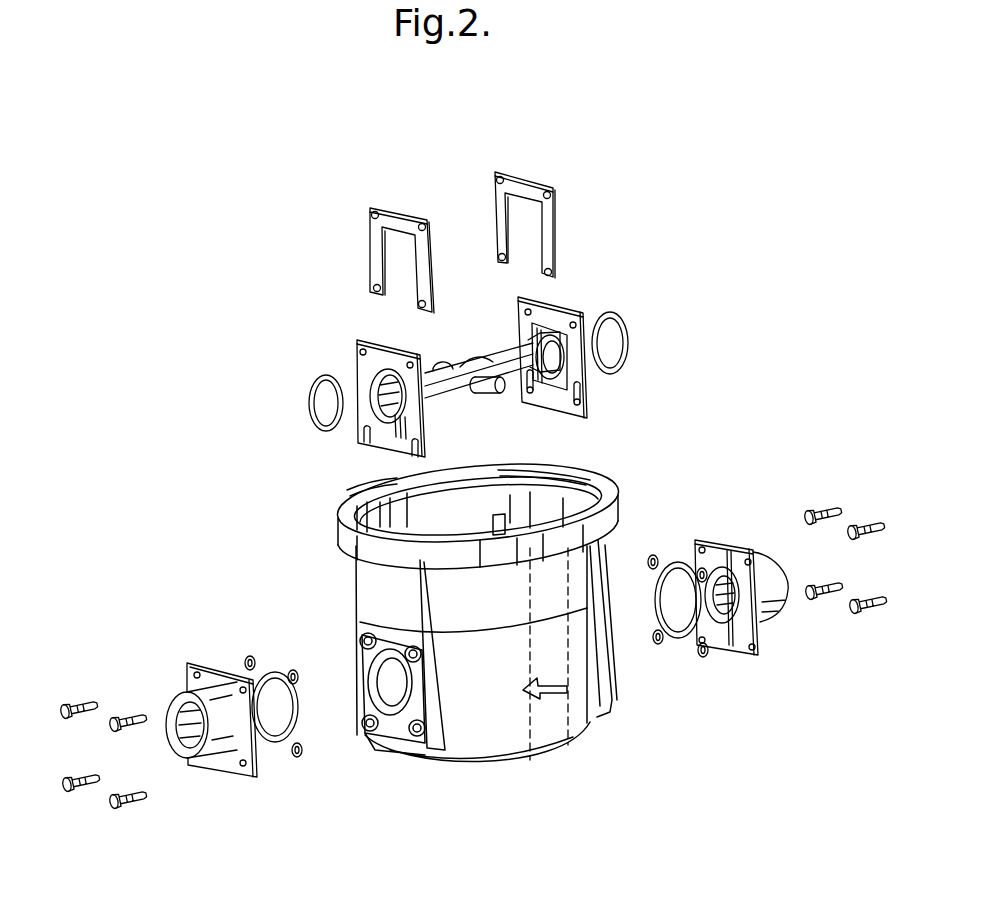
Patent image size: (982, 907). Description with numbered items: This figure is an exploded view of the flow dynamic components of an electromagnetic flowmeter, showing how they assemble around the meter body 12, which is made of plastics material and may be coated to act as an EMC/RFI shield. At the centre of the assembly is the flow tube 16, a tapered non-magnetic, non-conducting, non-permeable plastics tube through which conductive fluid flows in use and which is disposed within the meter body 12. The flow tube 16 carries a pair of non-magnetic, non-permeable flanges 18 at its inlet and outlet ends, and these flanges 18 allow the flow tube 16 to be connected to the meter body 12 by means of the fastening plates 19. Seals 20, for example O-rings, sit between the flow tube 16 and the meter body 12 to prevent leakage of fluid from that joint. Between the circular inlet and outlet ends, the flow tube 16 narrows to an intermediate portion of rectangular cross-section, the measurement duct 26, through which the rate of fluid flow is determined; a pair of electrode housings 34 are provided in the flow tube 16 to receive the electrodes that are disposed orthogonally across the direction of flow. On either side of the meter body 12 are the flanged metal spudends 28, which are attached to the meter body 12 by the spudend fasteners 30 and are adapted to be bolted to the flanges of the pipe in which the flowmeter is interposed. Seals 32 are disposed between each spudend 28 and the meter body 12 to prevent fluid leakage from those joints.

The meter body 12 is at (350, 587).
The flow tube 16 is at (355, 367).
The flanges 18 is at (373, 443).
The fastening plates 19 is at (502, 198).
The seals 20 is at (660, 317).
The measurement duct 26 is at (463, 358).
The spudends 28 is at (737, 640).
The spudend fasteners 30 is at (135, 710).
The seals 32 is at (668, 562).
The electrode housings 34 is at (443, 362).